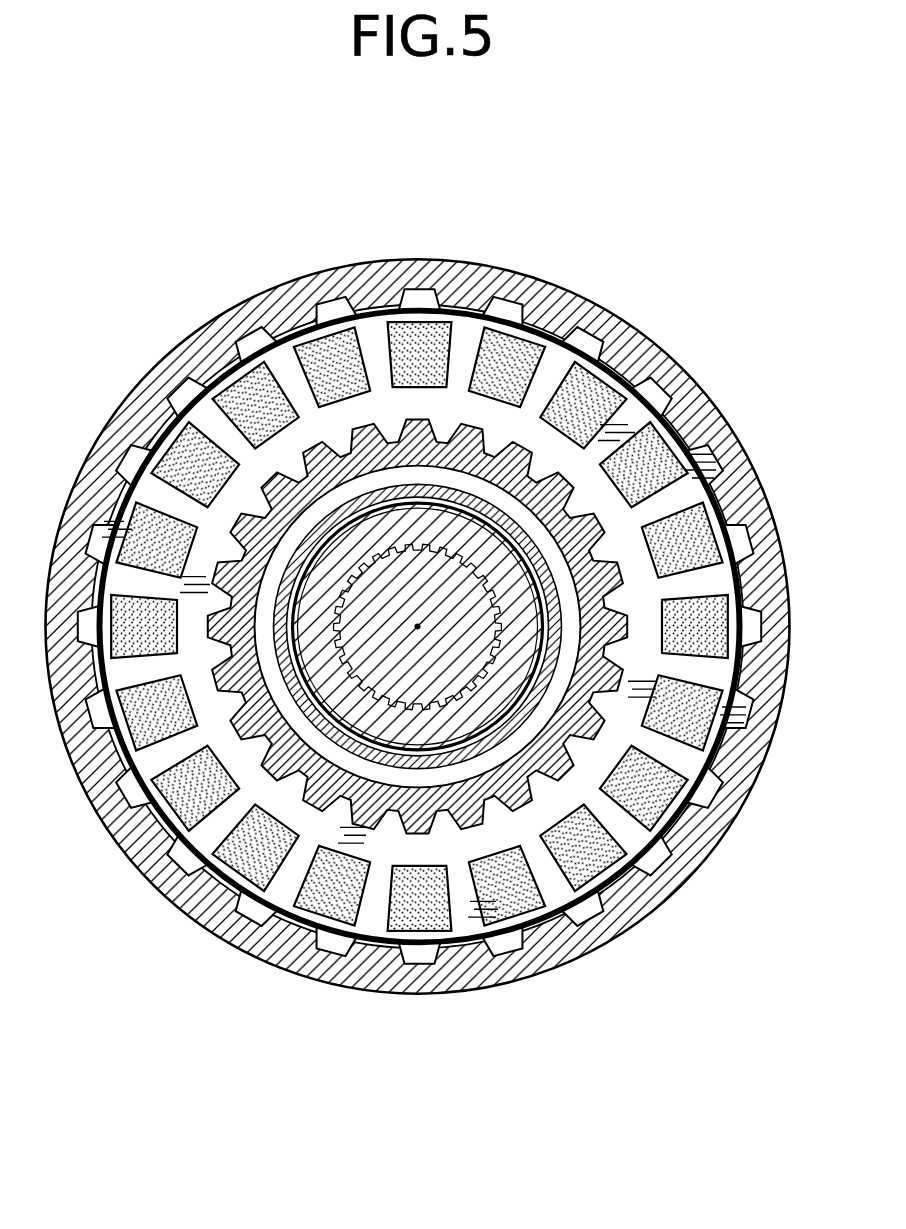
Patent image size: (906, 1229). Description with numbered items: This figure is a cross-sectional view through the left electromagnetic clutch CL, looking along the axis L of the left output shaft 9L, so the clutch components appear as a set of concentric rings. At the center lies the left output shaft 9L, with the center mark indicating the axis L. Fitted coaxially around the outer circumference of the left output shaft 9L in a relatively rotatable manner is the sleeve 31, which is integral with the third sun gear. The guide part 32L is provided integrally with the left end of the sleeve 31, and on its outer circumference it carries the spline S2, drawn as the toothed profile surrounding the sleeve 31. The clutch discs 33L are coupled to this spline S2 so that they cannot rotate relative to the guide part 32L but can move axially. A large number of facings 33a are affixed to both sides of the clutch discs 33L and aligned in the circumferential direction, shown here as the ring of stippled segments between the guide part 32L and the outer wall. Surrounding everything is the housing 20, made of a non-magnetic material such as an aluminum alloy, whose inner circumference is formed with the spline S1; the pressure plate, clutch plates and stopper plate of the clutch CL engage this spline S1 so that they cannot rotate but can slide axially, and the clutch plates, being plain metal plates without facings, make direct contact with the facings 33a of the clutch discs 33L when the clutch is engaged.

The housing 20 is at (566, 300).
The left electromagnetic clutch CL is at (698, 326).
The clutch discs 33L is at (177, 398).
The spline S1 is at (332, 305).
The spline S2 is at (540, 468).
The facings 33a is at (690, 527).
The sleeve 31 is at (253, 695).
The guide part 32L is at (452, 440).
The left output shaft 9L is at (403, 536).
The axis L is at (421, 627).